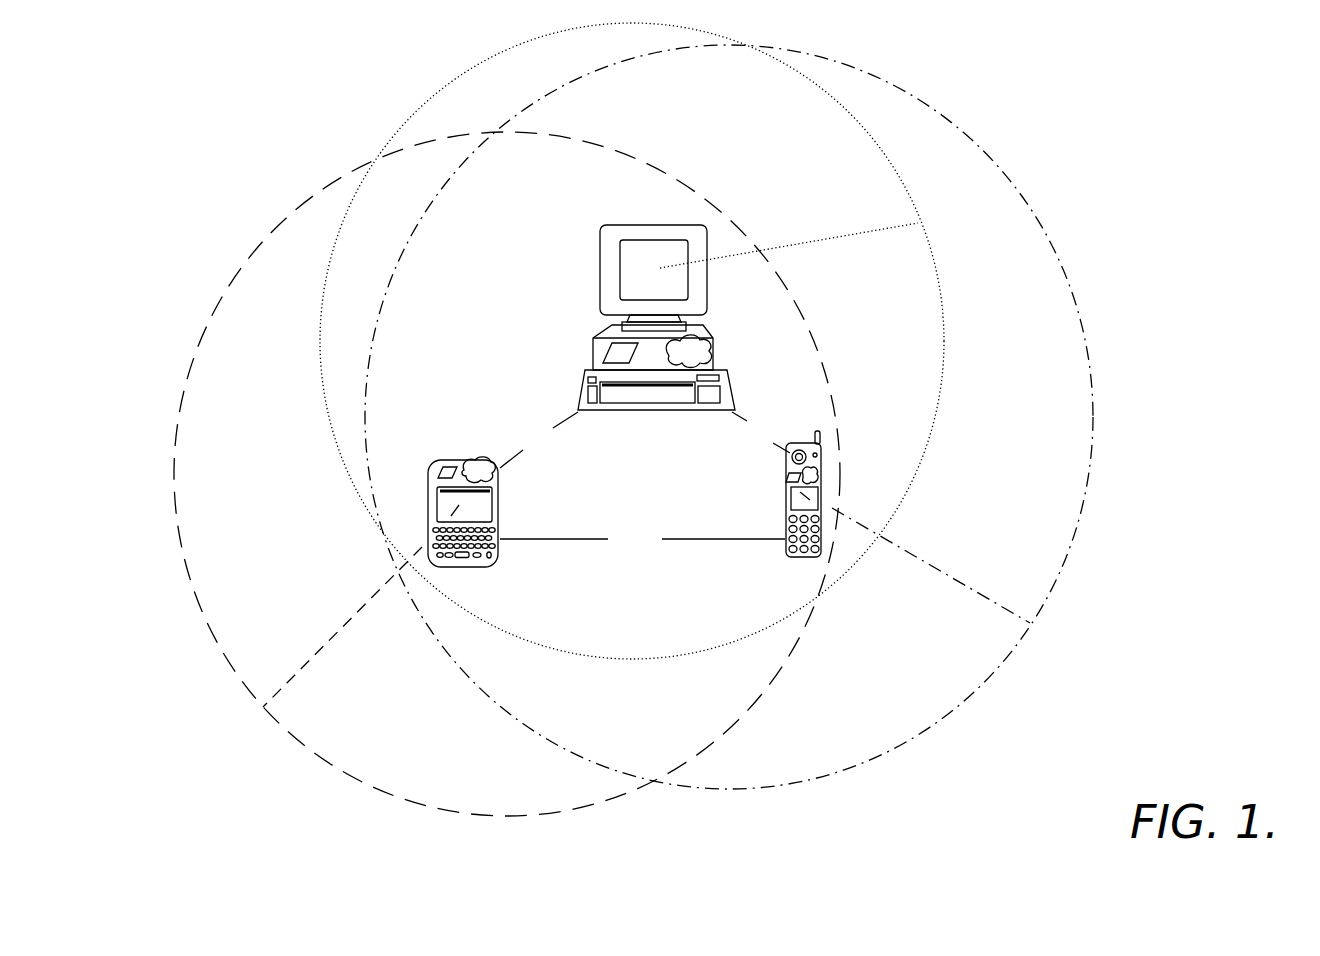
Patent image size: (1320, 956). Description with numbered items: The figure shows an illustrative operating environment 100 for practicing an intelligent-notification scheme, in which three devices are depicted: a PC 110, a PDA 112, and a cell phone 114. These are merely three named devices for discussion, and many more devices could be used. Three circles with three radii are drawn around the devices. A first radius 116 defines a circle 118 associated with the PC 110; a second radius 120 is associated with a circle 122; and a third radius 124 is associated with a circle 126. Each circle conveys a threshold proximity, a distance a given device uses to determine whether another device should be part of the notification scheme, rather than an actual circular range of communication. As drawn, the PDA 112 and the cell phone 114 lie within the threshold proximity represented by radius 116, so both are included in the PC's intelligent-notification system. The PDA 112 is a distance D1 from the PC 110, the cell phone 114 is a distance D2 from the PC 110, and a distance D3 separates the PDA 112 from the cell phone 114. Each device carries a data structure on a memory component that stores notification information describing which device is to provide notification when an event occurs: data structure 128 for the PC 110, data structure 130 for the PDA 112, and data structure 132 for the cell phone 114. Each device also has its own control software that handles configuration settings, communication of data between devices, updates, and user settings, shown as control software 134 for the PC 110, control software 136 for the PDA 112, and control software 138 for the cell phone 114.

The operating environment 100 is at (224, 146).
The PC 110 is at (600, 270).
The PDA 112 is at (470, 567).
The cell phone 114 is at (803, 557).
The first radius 116 is at (815, 243).
The circle 118 is at (935, 263).
The second radius 120 is at (929, 561).
The circle 122 is at (1093, 425).
The third radius 124 is at (328, 633).
The circle 126 is at (329, 762).
The data structure 128 is at (603, 354).
The data structure 130 is at (444, 465).
The data structure 132 is at (786, 478).
The control software 134 is at (711, 355).
The control software 136 is at (483, 460).
The control software 138 is at (818, 476).
The distance D1 is at (539, 440).
The distance D2 is at (761, 432).
The distance D3 is at (642, 540).